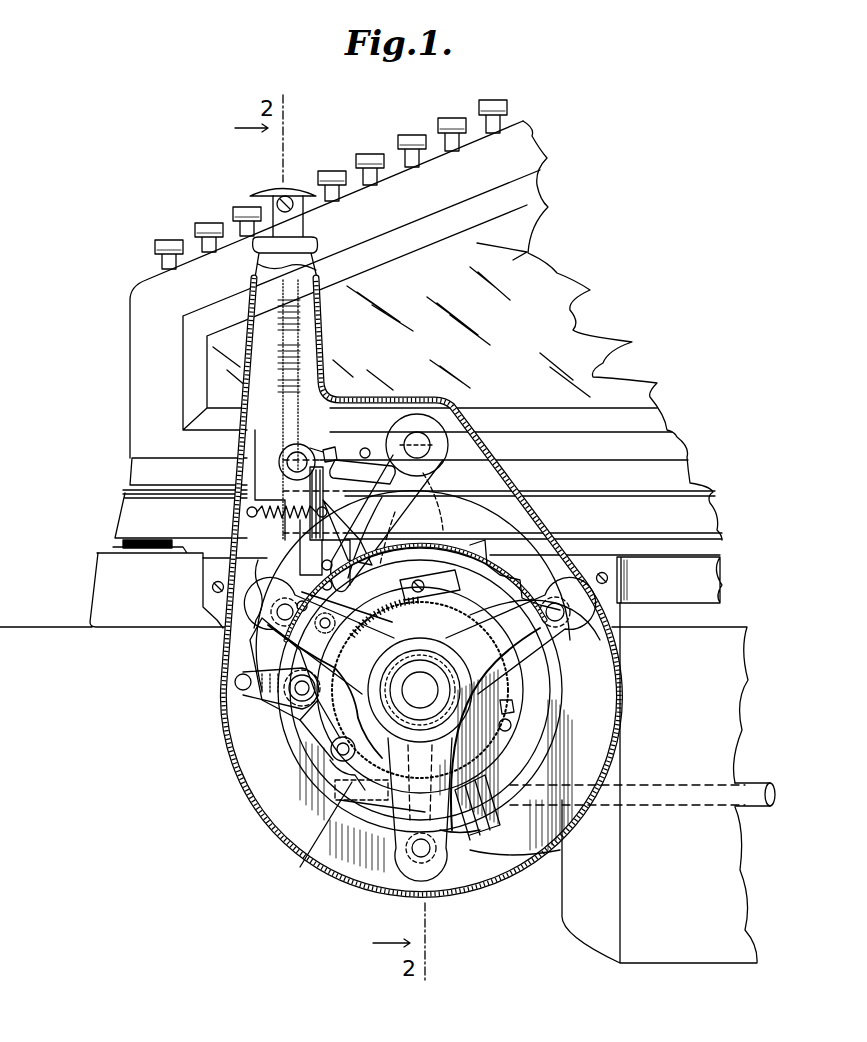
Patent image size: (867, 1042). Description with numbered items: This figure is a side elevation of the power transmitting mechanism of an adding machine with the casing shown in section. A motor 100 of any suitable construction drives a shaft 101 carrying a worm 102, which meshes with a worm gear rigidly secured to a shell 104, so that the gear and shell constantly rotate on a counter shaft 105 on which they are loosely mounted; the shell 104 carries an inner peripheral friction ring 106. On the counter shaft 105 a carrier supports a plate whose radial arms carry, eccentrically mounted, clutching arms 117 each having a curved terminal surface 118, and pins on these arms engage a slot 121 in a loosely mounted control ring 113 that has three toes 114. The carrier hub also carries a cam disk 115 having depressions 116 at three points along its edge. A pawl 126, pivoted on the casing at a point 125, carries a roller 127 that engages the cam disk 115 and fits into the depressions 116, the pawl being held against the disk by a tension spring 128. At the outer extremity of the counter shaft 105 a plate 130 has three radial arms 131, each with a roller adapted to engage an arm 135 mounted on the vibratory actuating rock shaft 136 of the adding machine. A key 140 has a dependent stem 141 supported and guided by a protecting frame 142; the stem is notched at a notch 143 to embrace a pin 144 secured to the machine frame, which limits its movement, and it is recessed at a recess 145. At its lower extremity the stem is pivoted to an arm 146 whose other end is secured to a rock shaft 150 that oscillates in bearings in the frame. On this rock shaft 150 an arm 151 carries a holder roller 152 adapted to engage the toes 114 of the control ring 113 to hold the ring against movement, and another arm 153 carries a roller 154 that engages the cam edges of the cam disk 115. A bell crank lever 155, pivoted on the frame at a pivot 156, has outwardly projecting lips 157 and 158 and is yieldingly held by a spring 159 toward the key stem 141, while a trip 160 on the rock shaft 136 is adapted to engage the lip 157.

The motor 100 is at (643, 948).
The shaft 101 is at (313, 790).
The worm 102 is at (480, 777).
The shell 104 is at (478, 580).
The counter shaft 105 is at (540, 670).
The inner peripheral friction ring 106 is at (492, 604).
The control ring 113 is at (510, 737).
The toes 114 is at (570, 643).
The cam disk 115 is at (330, 712).
The depressions 116 is at (443, 603).
The clutching arm 117 is at (510, 708).
The curved terminal surface 118 is at (507, 713).
The slot 121 is at (510, 740).
The pivot 125 is at (402, 560).
The pawl 126 is at (432, 572).
The roller 127 is at (423, 688).
The tension spring 128 is at (372, 563).
The plate 130 is at (314, 838).
The radial arms 131 is at (613, 616).
The arm 135 is at (412, 508).
The vibratory actuating rock shaft 136 is at (425, 437).
The key 140 is at (266, 189).
The stem 141 is at (300, 322).
The protecting frame 142 is at (330, 372).
The notch 143 is at (237, 498).
The pin 144 is at (240, 520).
The recess 145 is at (268, 558).
The arm 146 is at (265, 700).
The rock shaft 150 is at (300, 692).
The arm 151 is at (325, 625).
The holder roller 152 is at (290, 637).
The arm 153 is at (345, 728).
The roller 154 is at (250, 790).
The bell crank lever 155 is at (290, 477).
The pivot 156 is at (304, 458).
The lip 157 is at (398, 424).
The lip 158 is at (260, 542).
The spring 159 is at (240, 487).
The trip 160 is at (343, 472).